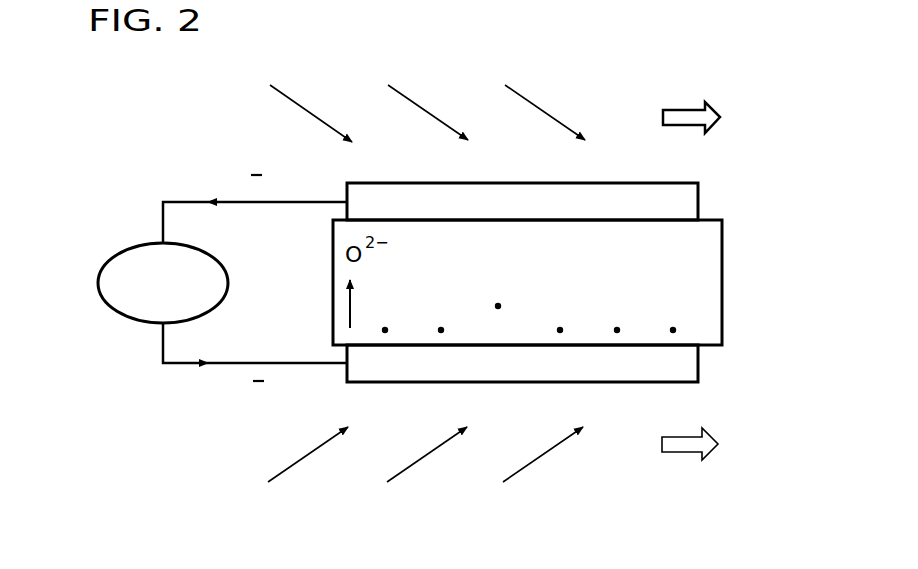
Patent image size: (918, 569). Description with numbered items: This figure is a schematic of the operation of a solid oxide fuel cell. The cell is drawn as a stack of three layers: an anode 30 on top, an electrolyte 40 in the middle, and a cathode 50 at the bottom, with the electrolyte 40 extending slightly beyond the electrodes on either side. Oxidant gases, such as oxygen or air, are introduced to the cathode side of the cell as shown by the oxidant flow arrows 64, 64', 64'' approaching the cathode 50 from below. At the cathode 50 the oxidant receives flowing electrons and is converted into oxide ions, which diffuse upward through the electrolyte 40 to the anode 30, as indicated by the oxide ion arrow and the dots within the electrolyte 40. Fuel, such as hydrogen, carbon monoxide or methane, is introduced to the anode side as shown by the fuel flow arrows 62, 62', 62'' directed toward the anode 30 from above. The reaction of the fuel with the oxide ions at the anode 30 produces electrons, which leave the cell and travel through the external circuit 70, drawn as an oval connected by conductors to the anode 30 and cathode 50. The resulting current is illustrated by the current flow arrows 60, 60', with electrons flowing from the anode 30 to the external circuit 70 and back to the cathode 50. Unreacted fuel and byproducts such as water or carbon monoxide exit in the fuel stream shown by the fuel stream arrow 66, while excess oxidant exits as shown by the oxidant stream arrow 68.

The anode 30 is at (698, 193).
The electrolyte 40 is at (722, 262).
The cathode 50 is at (698, 362).
The current flow arrow 60 is at (255, 195).
The current flow arrow 60' is at (254, 376).
The fuel flow arrow 62 is at (297, 102).
The fuel flow arrow 62' is at (413, 101).
The fuel flow arrow 62'' is at (530, 101).
The oxidant flow arrow 64 is at (295, 470).
The oxidant flow arrow 64' is at (416, 470).
The oxidant flow arrow 64'' is at (531, 470).
The fuel stream arrow 66 is at (680, 108).
The oxidant stream arrow 68 is at (678, 452).
The external circuit 70 is at (122, 252).